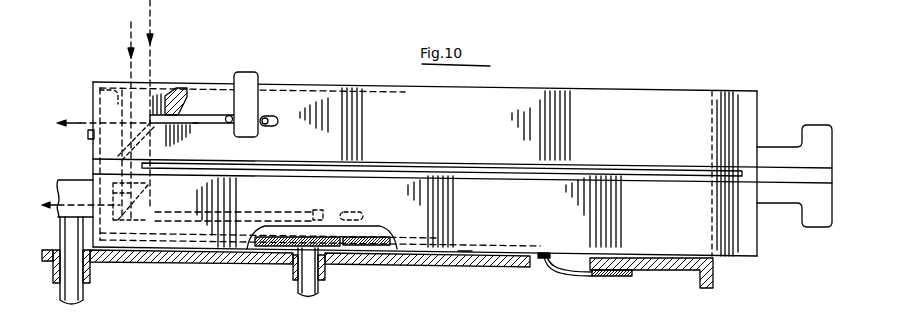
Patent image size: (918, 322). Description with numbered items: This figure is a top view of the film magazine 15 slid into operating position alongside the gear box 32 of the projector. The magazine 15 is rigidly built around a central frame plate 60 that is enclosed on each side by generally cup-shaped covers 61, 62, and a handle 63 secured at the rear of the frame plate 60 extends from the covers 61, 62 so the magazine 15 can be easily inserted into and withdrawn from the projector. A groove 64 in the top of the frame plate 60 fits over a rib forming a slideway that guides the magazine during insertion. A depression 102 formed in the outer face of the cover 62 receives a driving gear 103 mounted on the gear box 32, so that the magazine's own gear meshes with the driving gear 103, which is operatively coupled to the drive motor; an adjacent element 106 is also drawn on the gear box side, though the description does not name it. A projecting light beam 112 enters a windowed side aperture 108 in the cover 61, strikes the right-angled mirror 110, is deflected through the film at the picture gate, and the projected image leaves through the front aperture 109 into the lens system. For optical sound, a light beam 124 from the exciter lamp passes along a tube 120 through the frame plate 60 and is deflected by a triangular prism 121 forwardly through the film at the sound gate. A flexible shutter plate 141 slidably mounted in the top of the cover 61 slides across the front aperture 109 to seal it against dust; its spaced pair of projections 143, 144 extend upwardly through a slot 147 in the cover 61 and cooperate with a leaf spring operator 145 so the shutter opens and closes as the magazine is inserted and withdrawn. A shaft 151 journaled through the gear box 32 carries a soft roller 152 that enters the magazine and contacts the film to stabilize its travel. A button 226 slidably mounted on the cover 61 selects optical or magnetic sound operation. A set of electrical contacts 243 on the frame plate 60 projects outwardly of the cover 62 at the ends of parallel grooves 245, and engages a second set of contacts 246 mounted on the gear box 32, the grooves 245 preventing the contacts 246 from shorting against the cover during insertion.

The magazine 15 is at (712, 90).
The gear box 32 is at (493, 257).
The central frame plate 60 is at (672, 167).
The cover 61 is at (594, 100).
The cover 62 is at (748, 236).
The handle 63 is at (817, 124).
The groove 64 is at (588, 168).
The depression 102 is at (130, 241).
The driving gear 103 is at (276, 240).
The cap 106 is at (377, 227).
The windowed side aperture 108 is at (176, 82).
The front aperture 109 is at (92, 115).
The mirror 110 is at (180, 140).
The projecting light beam 112 is at (156, 33).
The tube 120 is at (114, 100).
The triangular prism 121 is at (151, 192).
The light beam 124 is at (129, 47).
The flexible shutter plate 141 is at (218, 124).
The projection 143 is at (229, 115).
The projection 144 is at (279, 121).
The leaf spring operator 145 is at (254, 75).
The slot 147 is at (195, 125).
The shaft 151 is at (84, 290).
The soft roller 152 is at (68, 183).
The button 226 is at (88, 136).
The electrical contacts 243 is at (544, 252).
The parallel grooves 245 is at (466, 251).
The electrical contacts 246 is at (564, 278).